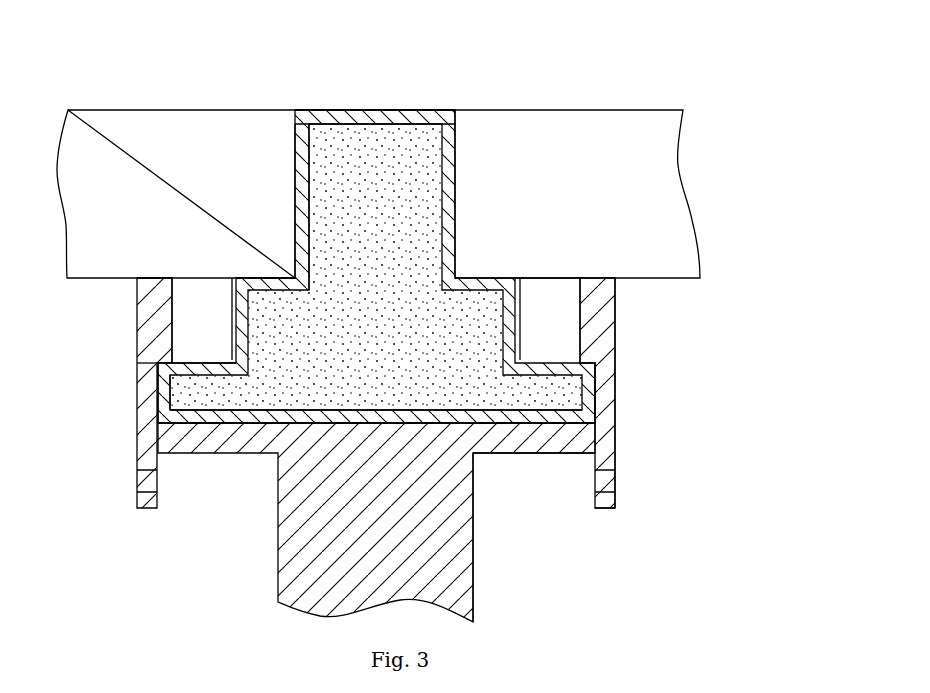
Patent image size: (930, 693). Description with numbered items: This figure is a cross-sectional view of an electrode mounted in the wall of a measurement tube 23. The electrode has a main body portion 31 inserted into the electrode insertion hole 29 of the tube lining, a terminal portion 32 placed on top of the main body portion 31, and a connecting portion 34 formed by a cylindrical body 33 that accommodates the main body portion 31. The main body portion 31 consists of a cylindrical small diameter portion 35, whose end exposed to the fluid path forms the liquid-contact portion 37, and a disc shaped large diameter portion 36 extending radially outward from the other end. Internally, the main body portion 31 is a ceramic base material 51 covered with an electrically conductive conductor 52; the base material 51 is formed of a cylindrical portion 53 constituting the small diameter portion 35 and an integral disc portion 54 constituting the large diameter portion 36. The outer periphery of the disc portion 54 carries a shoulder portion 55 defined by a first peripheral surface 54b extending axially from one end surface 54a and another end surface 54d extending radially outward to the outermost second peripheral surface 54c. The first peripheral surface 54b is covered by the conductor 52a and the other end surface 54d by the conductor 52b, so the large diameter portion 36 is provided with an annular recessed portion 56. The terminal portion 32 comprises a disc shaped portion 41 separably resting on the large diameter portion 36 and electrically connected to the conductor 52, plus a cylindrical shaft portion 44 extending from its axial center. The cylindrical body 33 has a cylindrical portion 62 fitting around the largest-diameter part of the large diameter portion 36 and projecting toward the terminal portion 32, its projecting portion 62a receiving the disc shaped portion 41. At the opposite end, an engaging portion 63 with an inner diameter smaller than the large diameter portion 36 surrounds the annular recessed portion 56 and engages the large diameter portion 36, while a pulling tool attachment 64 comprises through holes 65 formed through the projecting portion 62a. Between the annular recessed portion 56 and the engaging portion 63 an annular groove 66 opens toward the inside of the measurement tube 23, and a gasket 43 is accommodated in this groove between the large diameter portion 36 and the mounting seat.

The measurement tube 23 is at (168, 106).
The electrode insertion hole 29 is at (323, 152).
The main body portion 31 is at (378, 106).
The terminal portion 32 is at (480, 590).
The cylindrical body 33 is at (598, 421).
The connecting portion 34 is at (627, 348).
The small diameter portion 35 is at (295, 142).
The large diameter portion 36 is at (600, 381).
The liquid-contact portion 37 is at (414, 110).
The disc shaped portion 41 is at (512, 445).
The gasket 43 is at (573, 278).
The shaft portion 44 is at (475, 552).
The base material 51 is at (452, 157).
The conductor 52 is at (457, 180).
The conductor 52a is at (268, 350).
The conductor 52b is at (213, 387).
The cylindrical portion 53 is at (309, 184).
The disc portion 54 is at (175, 392).
The one end surface 54a is at (283, 280).
The first peripheral surface 54b is at (212, 358).
The second peripheral surface 54c is at (150, 412).
The other end surface 54d is at (173, 348).
The shoulder portion 55 is at (173, 320).
The annular recessed portion 56 is at (205, 355).
The cylindrical portion 62 is at (607, 400).
The projecting portion 62a is at (615, 500).
The engaging portion 63 is at (575, 303).
The pulling tool attachment 64 is at (625, 486).
The through holes 65 is at (142, 480).
The annular groove 66 is at (535, 360).